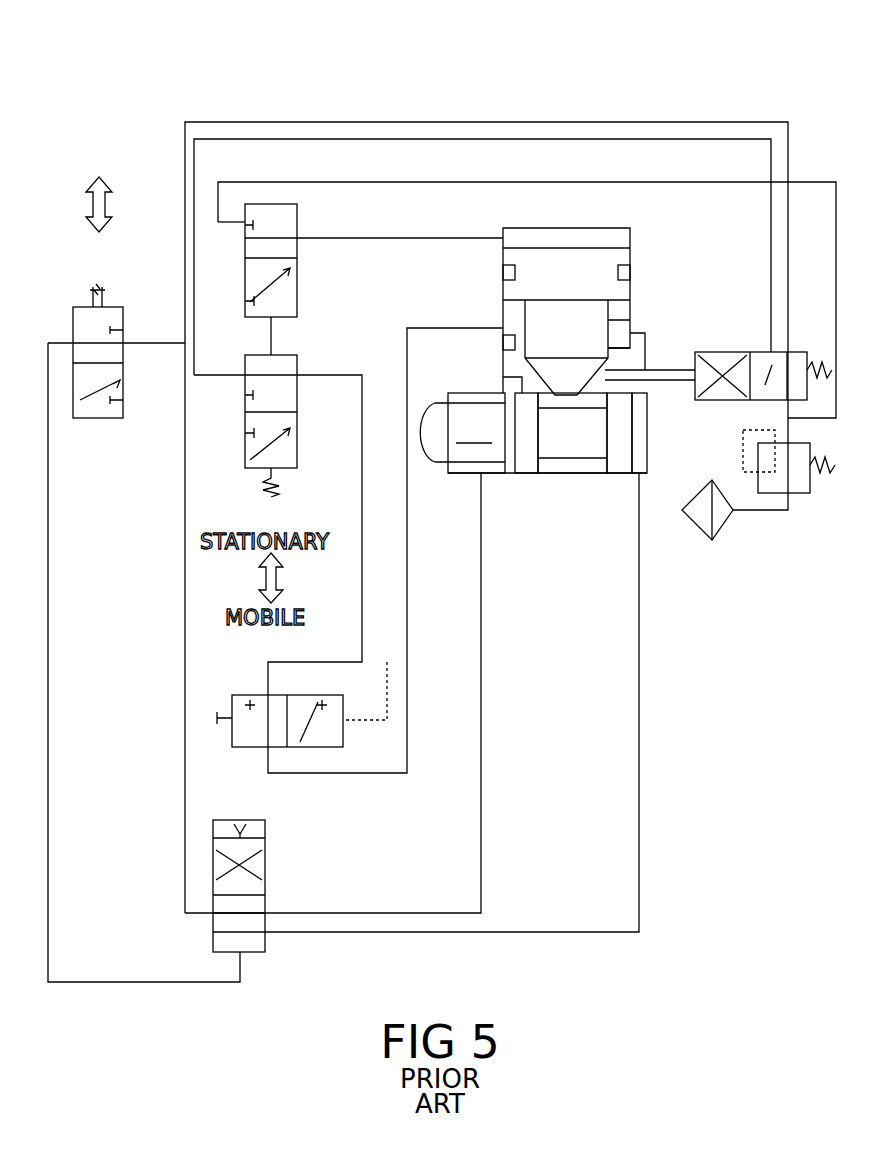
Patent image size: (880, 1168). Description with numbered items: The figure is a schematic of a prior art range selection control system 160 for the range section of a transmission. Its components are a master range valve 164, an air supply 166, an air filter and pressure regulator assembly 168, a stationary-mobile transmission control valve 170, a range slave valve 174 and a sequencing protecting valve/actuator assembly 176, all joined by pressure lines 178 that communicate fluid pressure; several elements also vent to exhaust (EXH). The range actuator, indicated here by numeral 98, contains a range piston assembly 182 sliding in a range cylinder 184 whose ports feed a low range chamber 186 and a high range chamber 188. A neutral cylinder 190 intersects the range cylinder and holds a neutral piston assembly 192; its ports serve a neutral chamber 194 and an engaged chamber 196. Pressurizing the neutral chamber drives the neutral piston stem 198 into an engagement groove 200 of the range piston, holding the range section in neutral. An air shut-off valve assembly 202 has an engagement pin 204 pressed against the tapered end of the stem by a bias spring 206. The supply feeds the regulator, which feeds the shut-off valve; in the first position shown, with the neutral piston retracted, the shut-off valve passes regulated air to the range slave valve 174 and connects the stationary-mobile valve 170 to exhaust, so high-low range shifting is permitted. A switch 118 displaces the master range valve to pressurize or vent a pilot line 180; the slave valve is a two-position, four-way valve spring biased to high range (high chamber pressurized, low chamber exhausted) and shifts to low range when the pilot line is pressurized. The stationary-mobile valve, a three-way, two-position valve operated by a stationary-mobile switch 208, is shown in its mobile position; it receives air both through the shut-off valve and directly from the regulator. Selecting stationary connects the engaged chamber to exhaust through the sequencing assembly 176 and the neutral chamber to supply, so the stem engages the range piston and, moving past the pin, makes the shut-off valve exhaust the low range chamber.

The actuator 98 is at (692, 272).
The switch 118 is at (96, 288).
The range selection control system 160 is at (728, 97).
The master range valve 164 is at (73, 322).
The air supply 166 is at (698, 530).
The air filter and pressure regulator assembly 168 is at (810, 493).
The stationary-mobile transmission control valve 170 is at (245, 420).
The range slave valve 174 is at (265, 885).
The sequencing protecting valve/actuator assembly 176 is at (247, 748).
The pressure lines 178 is at (476, 181).
The pilot line 180 is at (50, 580).
The range piston assembly 182 is at (462, 433).
The range cylinder 184 is at (585, 473).
The low range chamber 186 is at (484, 473).
The high range chamber 188 is at (645, 455).
The neutral cylinder 190 is at (505, 350).
The neutral piston assembly 192 is at (503, 288).
The neutral chamber 194 is at (578, 228).
The engaged chamber 196 is at (503, 318).
The neutral piston stem 198 is at (633, 322).
The engagement groove 200 is at (503, 380).
The air shut-off valve assembly 202 is at (760, 352).
The engagement pin 204 is at (655, 382).
The bias spring 206 is at (818, 352).
The stationary-mobile switch 208 is at (277, 494).